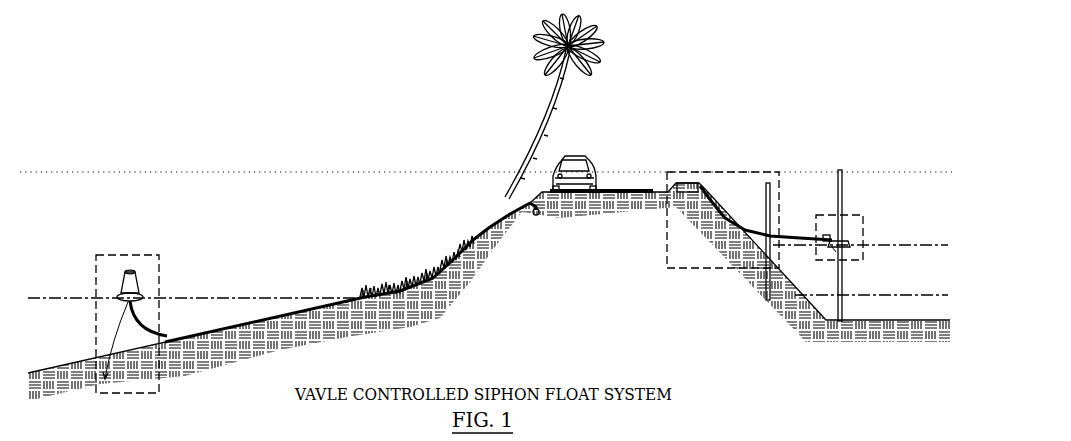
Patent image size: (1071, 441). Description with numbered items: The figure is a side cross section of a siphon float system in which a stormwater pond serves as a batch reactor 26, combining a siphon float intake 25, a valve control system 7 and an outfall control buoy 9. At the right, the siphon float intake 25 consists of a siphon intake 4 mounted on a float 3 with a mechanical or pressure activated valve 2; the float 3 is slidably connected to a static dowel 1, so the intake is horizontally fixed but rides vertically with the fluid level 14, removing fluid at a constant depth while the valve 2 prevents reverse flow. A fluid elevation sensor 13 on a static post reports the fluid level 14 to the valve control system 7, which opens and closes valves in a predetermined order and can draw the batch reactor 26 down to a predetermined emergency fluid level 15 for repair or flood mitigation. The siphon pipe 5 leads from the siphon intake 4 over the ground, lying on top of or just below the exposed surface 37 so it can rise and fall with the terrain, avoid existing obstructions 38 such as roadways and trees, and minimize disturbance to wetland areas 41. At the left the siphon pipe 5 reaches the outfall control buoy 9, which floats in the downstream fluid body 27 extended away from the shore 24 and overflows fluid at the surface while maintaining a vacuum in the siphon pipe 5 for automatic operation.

The dowel 1 is at (845, 206).
The valve 2 is at (825, 235).
The float 3 is at (849, 240).
The siphon intake 4 is at (834, 250).
The siphon pipe 5 is at (201, 331).
The valve control system 7 is at (666, 168).
The outfall control buoy 9 is at (163, 256).
The fluid elevation sensor 13 is at (773, 182).
The fluid level 14 is at (893, 245).
The emergency fluid level 15 is at (239, 295).
The shore 24 is at (362, 296).
The siphon float intake 25 is at (864, 214).
The batch reactor 26 is at (934, 268).
The downstream fluid body 27 is at (247, 308).
The exposed surface 37 is at (489, 213).
The existing obstructions 38 is at (529, 146).
The wetland areas 41 is at (429, 268).